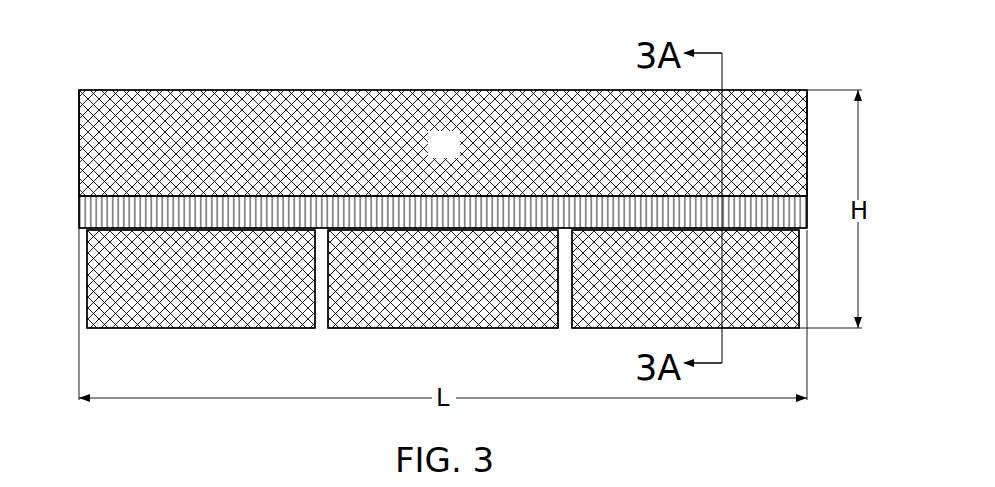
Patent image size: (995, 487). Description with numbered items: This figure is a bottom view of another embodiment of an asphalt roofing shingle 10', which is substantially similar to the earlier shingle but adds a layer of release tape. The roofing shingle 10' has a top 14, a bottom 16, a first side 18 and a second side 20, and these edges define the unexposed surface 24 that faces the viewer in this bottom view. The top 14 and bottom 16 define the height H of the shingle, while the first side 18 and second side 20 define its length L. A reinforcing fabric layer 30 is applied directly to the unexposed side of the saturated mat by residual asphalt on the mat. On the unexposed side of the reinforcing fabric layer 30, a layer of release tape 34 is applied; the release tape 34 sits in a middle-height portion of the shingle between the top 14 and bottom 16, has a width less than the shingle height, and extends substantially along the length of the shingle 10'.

The roofing shingle 10' is at (828, 33).
The top 14 is at (441, 89).
The bottom 16 is at (262, 331).
The first side 18 is at (79, 189).
The second side 20 is at (807, 185).
The unexposed surface 24 is at (457, 155).
The reinforcing fabric layer 30 is at (97, 270).
The release tape 34 is at (92, 206).